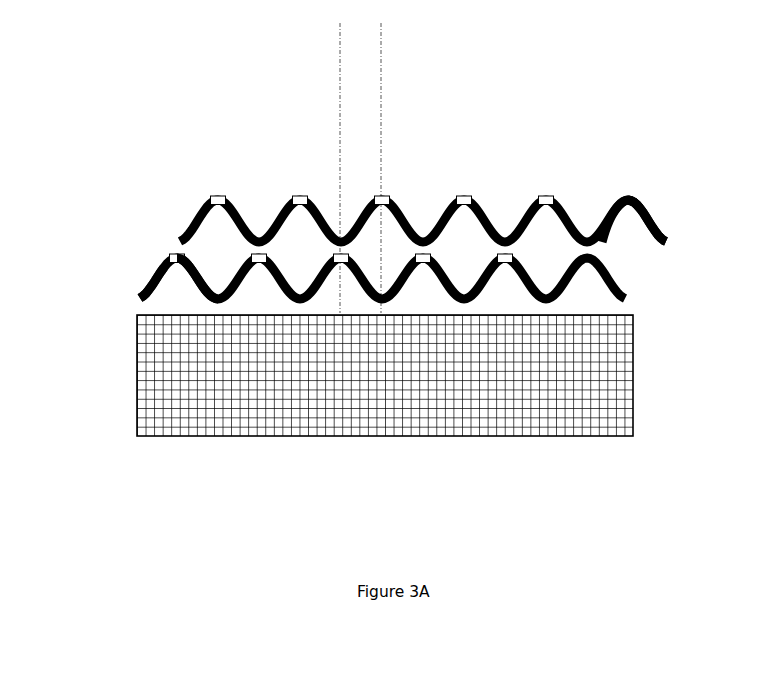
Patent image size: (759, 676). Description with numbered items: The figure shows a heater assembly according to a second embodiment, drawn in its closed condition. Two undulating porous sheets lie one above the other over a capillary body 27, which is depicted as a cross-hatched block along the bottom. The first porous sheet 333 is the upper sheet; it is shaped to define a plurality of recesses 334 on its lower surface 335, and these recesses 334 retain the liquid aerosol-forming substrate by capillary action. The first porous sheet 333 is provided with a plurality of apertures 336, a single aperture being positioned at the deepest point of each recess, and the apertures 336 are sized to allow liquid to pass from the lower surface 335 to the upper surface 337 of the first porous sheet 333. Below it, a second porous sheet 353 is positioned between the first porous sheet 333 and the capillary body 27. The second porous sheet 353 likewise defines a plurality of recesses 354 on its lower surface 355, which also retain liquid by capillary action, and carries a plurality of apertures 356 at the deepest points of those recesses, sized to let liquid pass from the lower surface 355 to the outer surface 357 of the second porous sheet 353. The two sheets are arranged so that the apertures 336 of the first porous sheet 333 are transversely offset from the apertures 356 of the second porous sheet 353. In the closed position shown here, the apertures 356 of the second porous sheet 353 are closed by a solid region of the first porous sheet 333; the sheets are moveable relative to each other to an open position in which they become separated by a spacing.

The capillary body 27 is at (372, 437).
The first porous sheet 333 is at (141, 218).
The recesses 334 is at (640, 244).
The lower surface 335 is at (650, 230).
The apertures 336 is at (550, 183).
The upper surface 337 is at (442, 211).
The second porous sheet 353 is at (118, 282).
The recesses 354 is at (176, 290).
The lower surface 355 is at (158, 272).
The apertures 356 is at (168, 240).
The outer surface 357 is at (243, 262).